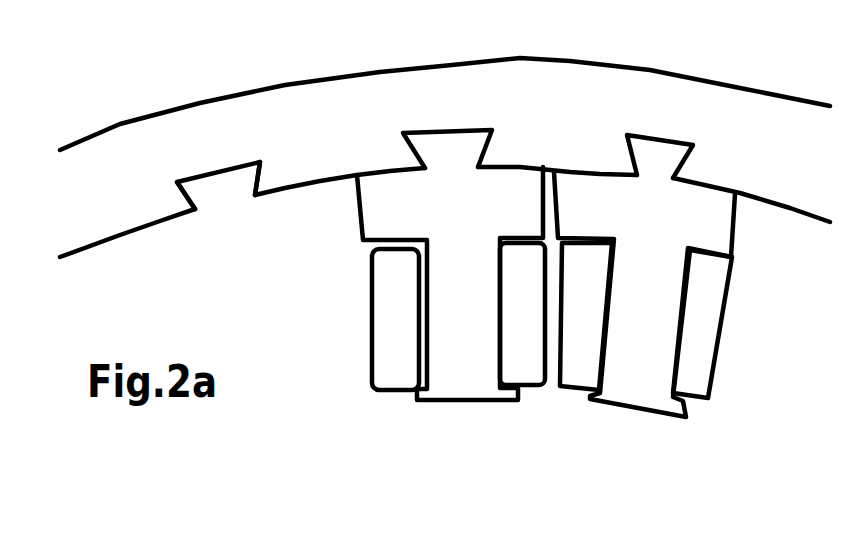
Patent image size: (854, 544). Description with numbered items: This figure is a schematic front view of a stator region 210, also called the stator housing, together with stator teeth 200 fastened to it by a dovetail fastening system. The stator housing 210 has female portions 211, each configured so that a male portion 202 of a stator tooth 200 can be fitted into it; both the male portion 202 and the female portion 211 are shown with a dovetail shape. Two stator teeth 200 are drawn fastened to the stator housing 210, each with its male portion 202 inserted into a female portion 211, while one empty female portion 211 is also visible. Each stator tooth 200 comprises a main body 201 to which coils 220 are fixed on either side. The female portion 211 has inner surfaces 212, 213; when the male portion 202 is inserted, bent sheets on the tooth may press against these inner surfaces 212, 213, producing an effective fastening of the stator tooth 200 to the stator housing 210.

The stator tooth 200 is at (686, 436).
The main body 201 is at (465, 367).
The male portion 202 is at (454, 155).
The stator region 210 is at (323, 118).
The female portion 211 is at (220, 187).
The inner surface 212 is at (198, 190).
The inner surface 213 is at (246, 181).
The coil 220 is at (400, 366).